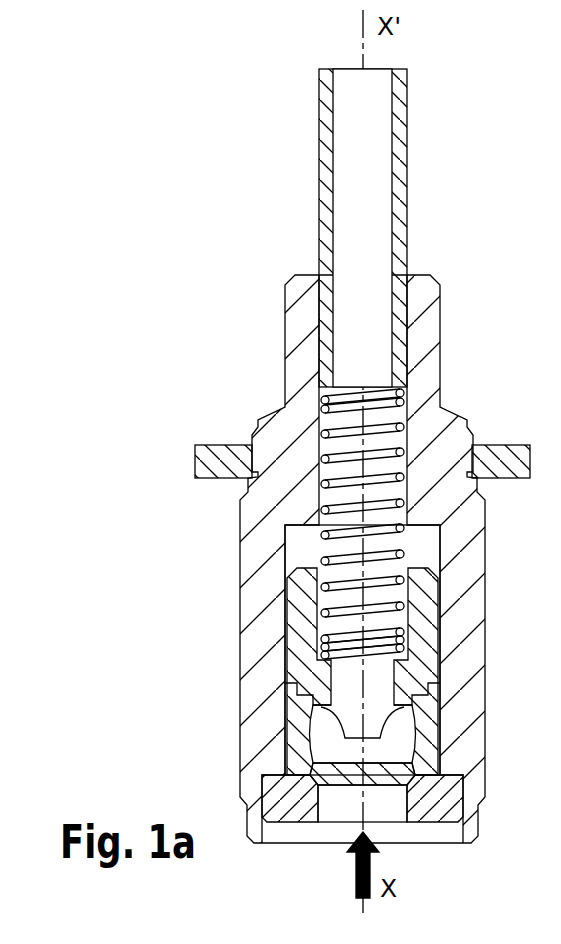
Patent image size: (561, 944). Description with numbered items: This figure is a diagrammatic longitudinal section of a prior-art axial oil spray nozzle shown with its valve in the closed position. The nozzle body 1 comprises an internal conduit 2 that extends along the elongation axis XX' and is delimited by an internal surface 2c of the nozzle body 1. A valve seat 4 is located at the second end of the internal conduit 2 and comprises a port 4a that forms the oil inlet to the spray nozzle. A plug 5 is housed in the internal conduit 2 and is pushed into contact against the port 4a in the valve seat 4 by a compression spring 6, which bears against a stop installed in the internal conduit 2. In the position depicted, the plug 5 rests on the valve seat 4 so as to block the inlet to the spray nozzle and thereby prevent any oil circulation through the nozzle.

The nozzle body 1 is at (298, 340).
The internal conduit 2 is at (290, 601).
The internal surface 2c is at (298, 550).
The valve seat 4 is at (275, 787).
The port 4a is at (337, 805).
The plug 5 is at (402, 685).
The compression spring 6 is at (400, 557).